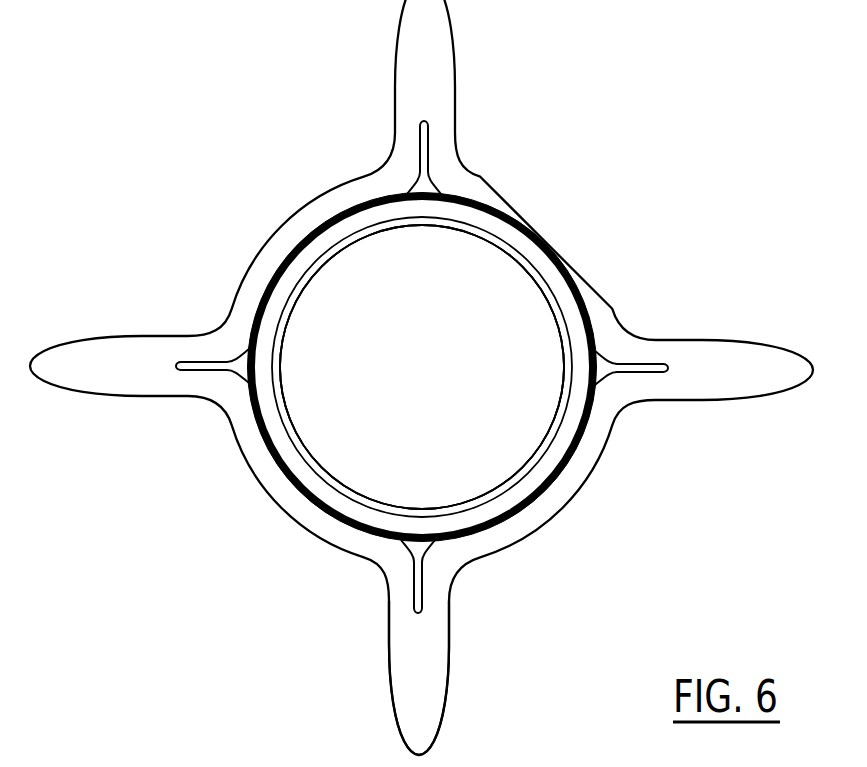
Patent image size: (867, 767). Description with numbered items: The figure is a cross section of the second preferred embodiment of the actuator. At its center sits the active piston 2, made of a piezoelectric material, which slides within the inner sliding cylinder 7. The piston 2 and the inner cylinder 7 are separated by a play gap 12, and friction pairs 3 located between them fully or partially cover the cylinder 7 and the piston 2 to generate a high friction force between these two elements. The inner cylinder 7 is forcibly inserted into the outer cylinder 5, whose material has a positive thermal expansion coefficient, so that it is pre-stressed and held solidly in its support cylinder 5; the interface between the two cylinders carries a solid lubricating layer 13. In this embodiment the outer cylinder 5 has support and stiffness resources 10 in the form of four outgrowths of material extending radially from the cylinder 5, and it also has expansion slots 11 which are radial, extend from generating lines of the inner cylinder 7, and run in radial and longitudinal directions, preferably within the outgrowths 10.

The active piston 2 is at (488, 437).
The friction pairs 3 is at (538, 267).
The outer cylinder 5 is at (298, 237).
The inner sliding cylinder 7 is at (268, 322).
The support and stiffness resources 10 is at (412, 667).
The expansion slots 11 is at (423, 578).
The play gap 12 is at (567, 413).
The solid lubricating layer 13 is at (275, 472).